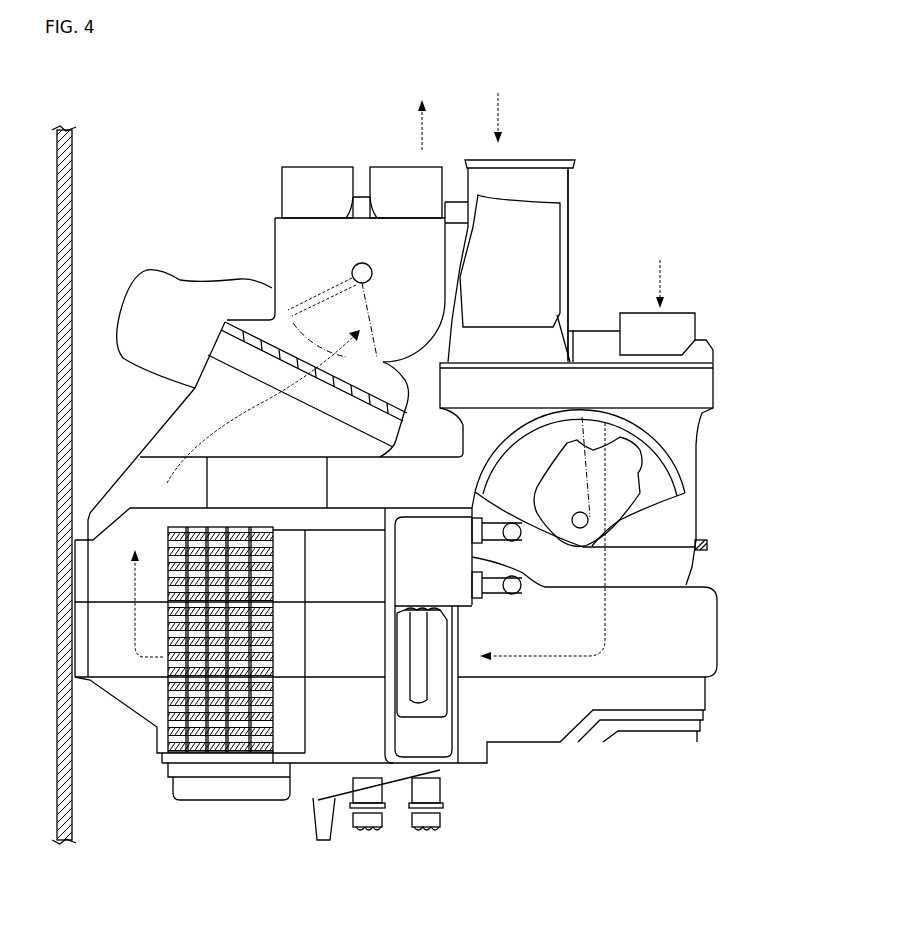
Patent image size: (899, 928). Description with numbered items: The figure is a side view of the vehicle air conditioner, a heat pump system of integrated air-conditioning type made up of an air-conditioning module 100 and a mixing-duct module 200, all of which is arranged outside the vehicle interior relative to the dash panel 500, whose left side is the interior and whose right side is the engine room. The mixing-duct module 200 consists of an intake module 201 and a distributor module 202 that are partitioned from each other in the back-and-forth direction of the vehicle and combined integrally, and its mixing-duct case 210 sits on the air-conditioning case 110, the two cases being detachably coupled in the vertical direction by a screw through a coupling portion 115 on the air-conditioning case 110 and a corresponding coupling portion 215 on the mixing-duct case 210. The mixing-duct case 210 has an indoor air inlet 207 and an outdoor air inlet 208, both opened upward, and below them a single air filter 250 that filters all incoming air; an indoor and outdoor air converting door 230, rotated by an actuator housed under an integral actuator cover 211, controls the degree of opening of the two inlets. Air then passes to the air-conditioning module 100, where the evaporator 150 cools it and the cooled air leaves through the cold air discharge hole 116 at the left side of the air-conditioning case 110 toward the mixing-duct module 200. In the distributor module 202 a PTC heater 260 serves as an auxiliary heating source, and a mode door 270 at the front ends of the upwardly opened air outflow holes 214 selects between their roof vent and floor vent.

The air-conditioning module 100 is at (728, 668).
The air-conditioning case 110 is at (719, 604).
The coupling portion 115 is at (700, 550).
The cold air discharge hole 116 is at (208, 735).
The evaporator 150 is at (420, 715).
The mixing-duct module 200 is at (590, 191).
The intake module 201 is at (580, 213).
The distributor module 202 is at (142, 432).
The indoor air inlet 207 is at (518, 160).
The outdoor air inlet 208 is at (686, 313).
The mixing-duct case 210 is at (700, 428).
The actuator cover 211 is at (620, 483).
The air outflow holes 214 is at (373, 167).
The coupling portion 215 is at (702, 545).
The indoor and outdoor air converting door 230 is at (520, 425).
The air filter 250 is at (713, 388).
The PTC heater 260 is at (222, 337).
The mode door 270 is at (320, 293).
The dash panel 500 is at (73, 795).